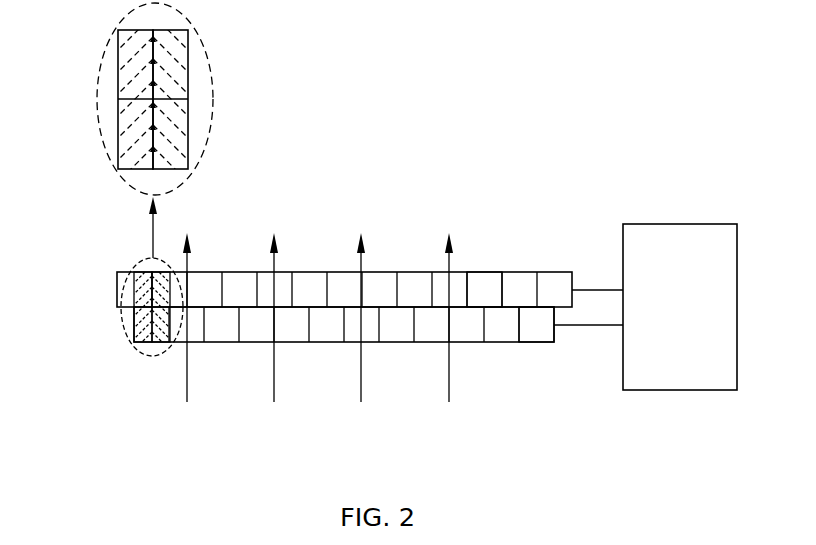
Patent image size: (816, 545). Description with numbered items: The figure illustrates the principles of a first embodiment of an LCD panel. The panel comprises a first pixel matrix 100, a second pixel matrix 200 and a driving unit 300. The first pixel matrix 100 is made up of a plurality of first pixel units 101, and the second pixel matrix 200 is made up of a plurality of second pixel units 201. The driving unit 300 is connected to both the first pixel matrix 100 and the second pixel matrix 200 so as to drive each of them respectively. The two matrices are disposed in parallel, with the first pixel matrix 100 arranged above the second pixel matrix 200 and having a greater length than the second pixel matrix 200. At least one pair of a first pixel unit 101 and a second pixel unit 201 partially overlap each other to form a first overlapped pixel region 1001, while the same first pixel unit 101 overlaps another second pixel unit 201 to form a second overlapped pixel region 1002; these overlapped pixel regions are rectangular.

The first pixel matrix 100 is at (114, 291).
The first pixel unit 101 is at (482, 290).
The second pixel matrix 200 is at (130, 331).
The second pixel unit 201 is at (537, 326).
The driving unit 300 is at (679, 223).
The first overlapped pixel region 1001 is at (131, 169).
The second overlapped pixel region 1002 is at (175, 169).